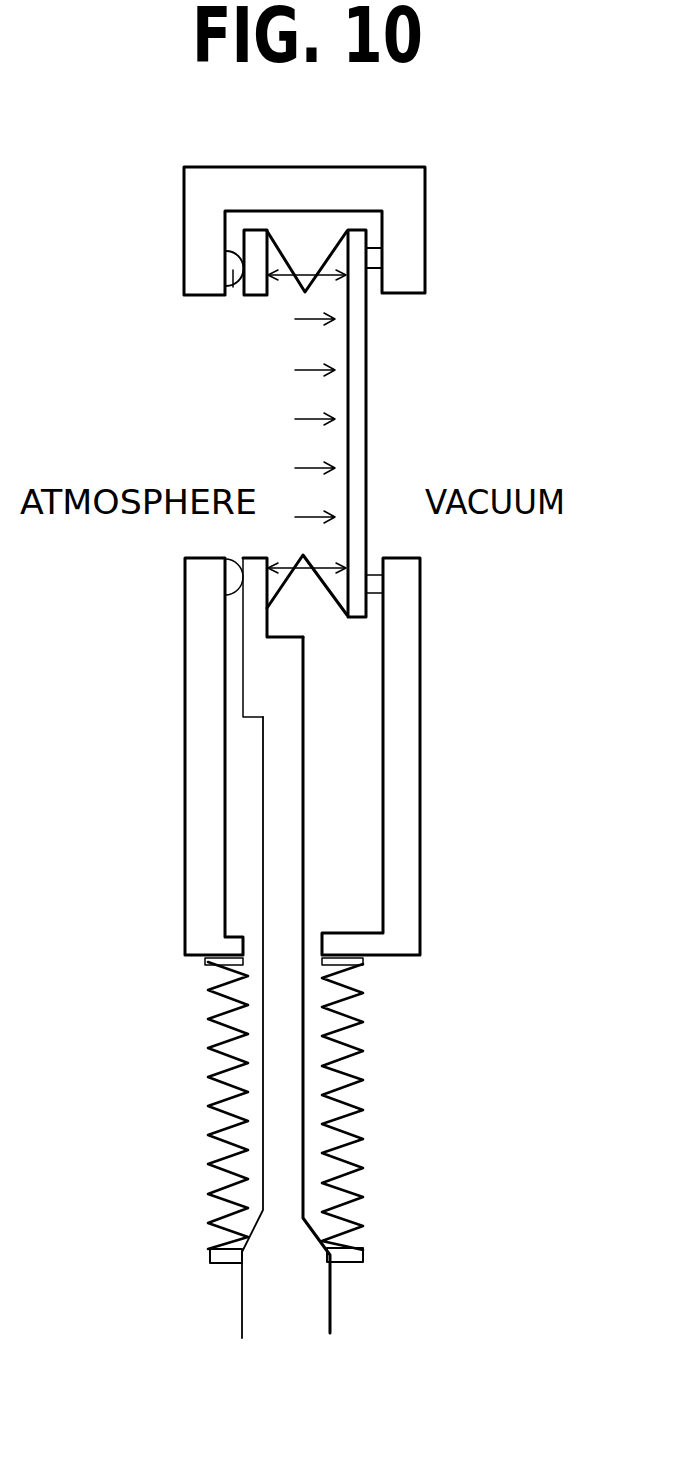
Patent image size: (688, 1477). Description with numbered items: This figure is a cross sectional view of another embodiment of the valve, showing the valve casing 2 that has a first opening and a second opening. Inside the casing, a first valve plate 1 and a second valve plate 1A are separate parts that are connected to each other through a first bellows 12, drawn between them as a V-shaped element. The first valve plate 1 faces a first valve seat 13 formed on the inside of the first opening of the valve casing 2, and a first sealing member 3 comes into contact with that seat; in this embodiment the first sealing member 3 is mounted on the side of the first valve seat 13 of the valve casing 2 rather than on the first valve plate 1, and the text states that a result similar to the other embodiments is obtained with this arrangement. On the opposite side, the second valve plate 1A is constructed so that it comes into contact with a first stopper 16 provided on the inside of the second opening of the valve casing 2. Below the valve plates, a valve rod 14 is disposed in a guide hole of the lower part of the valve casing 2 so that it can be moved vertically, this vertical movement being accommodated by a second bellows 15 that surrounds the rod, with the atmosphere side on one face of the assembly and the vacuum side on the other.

The first valve plate 1 is at (250, 292).
The second valve plate 1A is at (360, 432).
The valve casing 2 is at (205, 192).
The first sealing member 3 is at (234, 272).
The first bellows 12 is at (332, 258).
The first valve seat 13 is at (236, 268).
The valve rod 14 is at (280, 830).
The second bellows 15 is at (217, 1107).
The first stopper 16 is at (373, 262).